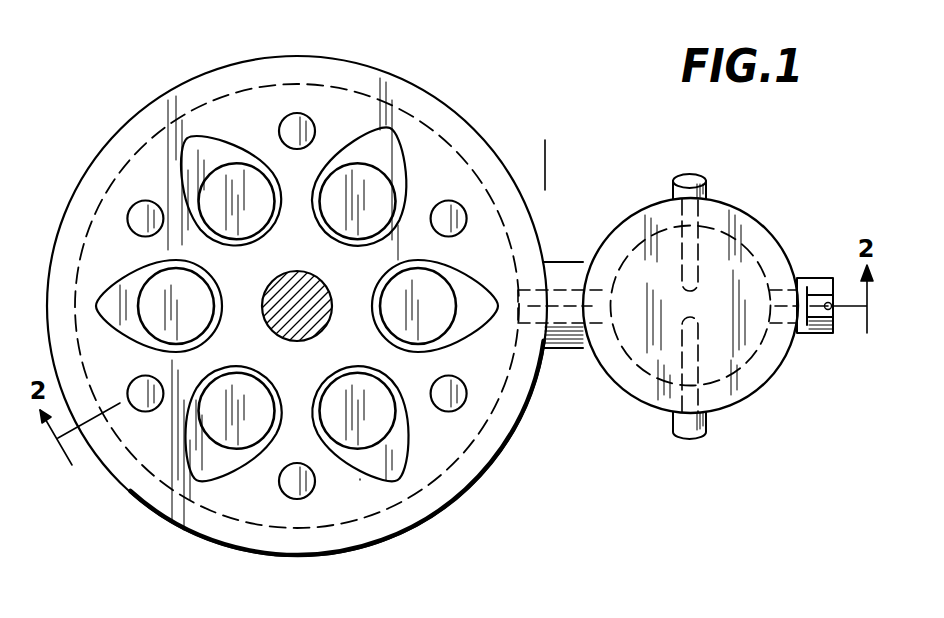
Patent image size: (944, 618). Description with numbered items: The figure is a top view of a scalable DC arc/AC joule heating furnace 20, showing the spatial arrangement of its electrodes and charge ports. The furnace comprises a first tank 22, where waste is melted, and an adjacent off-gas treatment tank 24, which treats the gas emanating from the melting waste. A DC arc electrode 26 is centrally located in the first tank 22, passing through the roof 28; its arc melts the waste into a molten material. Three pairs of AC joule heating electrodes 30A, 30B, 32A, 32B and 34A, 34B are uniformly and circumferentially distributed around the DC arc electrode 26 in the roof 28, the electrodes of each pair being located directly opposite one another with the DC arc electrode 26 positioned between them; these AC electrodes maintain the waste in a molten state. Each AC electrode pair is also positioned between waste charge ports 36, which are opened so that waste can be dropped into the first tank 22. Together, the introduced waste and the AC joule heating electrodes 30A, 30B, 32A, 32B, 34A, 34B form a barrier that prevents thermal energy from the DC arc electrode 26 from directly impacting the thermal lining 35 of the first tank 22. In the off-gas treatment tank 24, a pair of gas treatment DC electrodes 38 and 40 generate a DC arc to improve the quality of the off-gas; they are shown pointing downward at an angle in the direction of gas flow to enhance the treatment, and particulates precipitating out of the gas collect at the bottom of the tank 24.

The scalable DC arc/AC joule heating furnace 20 is at (629, 479).
The first tank 22 is at (462, 115).
The off-gas treatment tank 24 is at (775, 372).
The DC arc electrode 26 is at (270, 320).
The roof 28 is at (352, 502).
The AC joule heating electrode 30A is at (483, 477).
The AC joule heating electrode 30B is at (143, 212).
The AC joule heating electrode 32A is at (290, 127).
The AC joule heating electrode 32B is at (288, 488).
The AC joule heating electrode 34A is at (142, 400).
The AC joule heating electrode 34B is at (498, 183).
The thermal lining 35 is at (483, 425).
The waste charge ports 36 is at (245, 177).
The gas treatment DC electrode 38 is at (700, 222).
The gas treatment DC electrode 40 is at (700, 397).